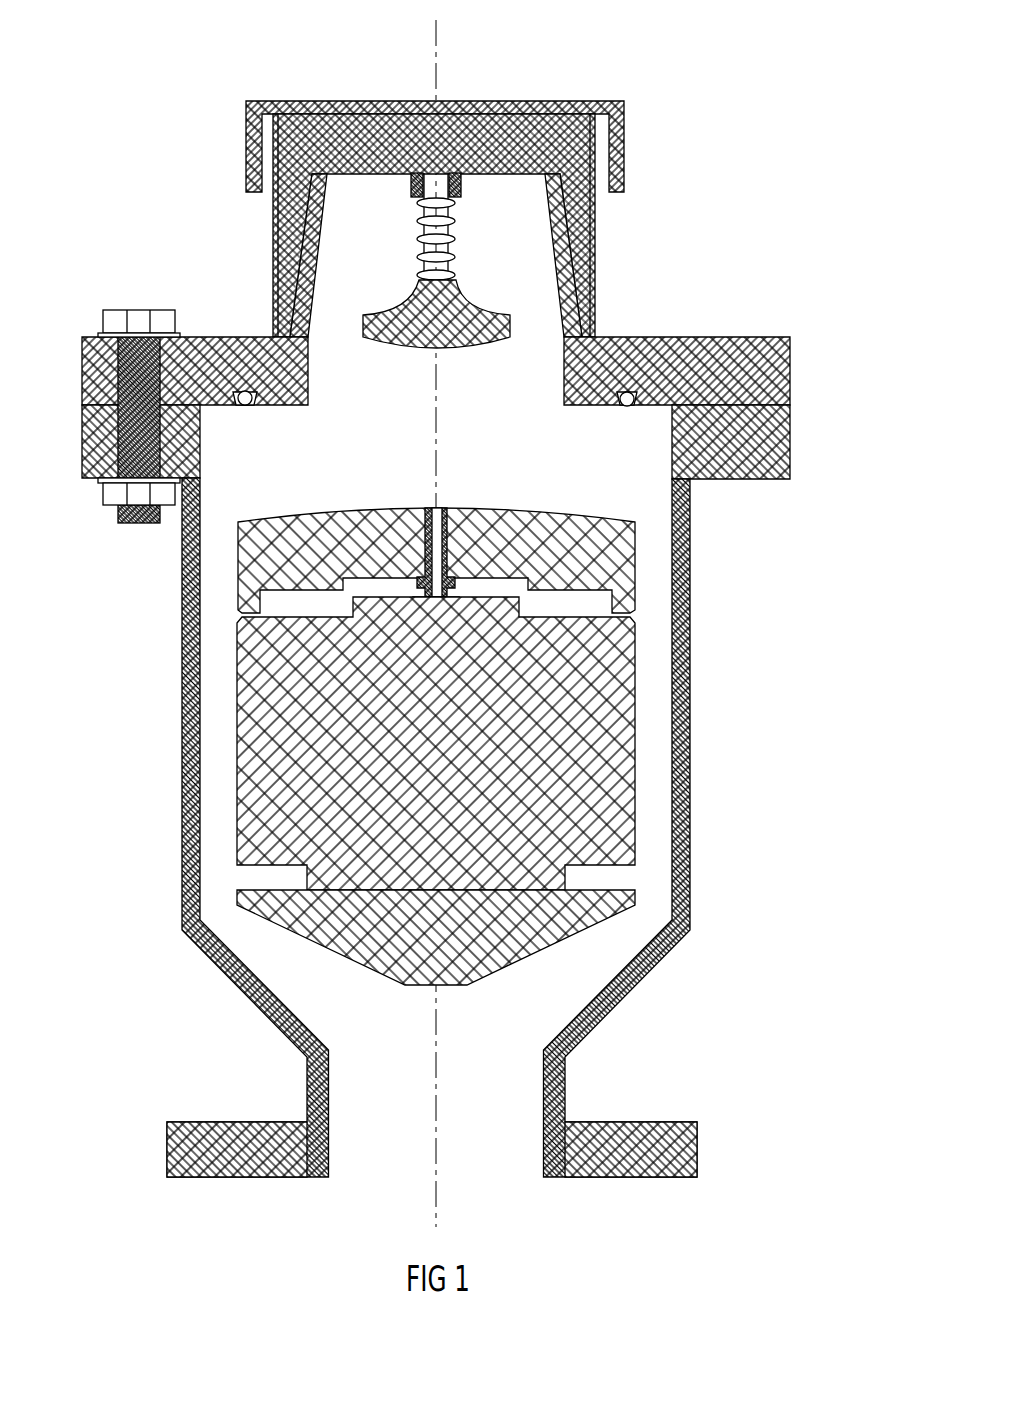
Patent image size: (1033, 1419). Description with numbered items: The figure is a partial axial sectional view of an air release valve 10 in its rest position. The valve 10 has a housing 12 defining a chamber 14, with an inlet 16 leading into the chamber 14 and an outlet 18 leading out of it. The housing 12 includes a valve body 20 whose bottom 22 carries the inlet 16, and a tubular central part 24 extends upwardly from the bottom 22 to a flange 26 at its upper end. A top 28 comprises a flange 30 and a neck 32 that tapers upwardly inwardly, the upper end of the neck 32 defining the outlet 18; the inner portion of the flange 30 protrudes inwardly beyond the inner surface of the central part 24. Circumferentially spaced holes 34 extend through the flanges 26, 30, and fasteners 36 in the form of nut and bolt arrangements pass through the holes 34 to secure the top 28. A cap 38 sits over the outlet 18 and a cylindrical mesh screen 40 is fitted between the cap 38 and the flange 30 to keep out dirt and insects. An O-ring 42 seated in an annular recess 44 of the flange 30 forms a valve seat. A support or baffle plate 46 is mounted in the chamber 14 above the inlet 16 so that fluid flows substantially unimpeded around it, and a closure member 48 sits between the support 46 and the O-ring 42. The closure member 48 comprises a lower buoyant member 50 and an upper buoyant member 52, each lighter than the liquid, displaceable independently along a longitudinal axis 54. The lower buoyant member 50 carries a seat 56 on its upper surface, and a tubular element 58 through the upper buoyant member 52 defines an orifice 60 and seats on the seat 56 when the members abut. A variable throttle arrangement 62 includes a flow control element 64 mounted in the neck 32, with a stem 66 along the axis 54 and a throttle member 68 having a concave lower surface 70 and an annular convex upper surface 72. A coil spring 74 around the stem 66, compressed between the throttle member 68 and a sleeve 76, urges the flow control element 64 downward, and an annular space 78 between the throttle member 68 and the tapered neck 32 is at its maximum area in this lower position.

The air release valve 10 is at (147, 65).
The housing 12 is at (828, 280).
The chamber 14 is at (237, 505).
The inlet 16 is at (353, 1162).
The outlet 18 is at (522, 180).
The valve body 20 is at (150, 880).
The bottom 22 is at (193, 1120).
The tubular central part 24 is at (690, 803).
The flange 26 is at (790, 452).
The top 28 is at (745, 302).
The flange 30 is at (777, 335).
The neck 32 is at (577, 280).
The holes 34 is at (113, 383).
The fasteners 36 is at (120, 310).
The cap 38 is at (624, 136).
The screen 40 is at (596, 255).
The O-ring 42 is at (622, 408).
The annular recess 44 is at (254, 408).
The support or baffle plate 46 is at (387, 970).
The closure member 48 is at (645, 625).
The lower buoyant member 50 is at (637, 700).
The upper buoyant member 52 is at (628, 553).
The longitudinal axis 54 is at (436, 1107).
The seat 56 is at (447, 587).
The tubular element 58 is at (453, 518).
The orifice 60 is at (424, 515).
The variable throttle arrangement 62 is at (318, 330).
The flow control element 64 is at (347, 250).
The stem 66 is at (452, 214).
The throttle member 68 is at (497, 337).
The concave lower surface 70 is at (445, 350).
The annular convex upper surface 72 is at (475, 303).
The coil spring 74 is at (415, 238).
The sleeve 76 is at (411, 192).
The annular space 78 is at (338, 342).